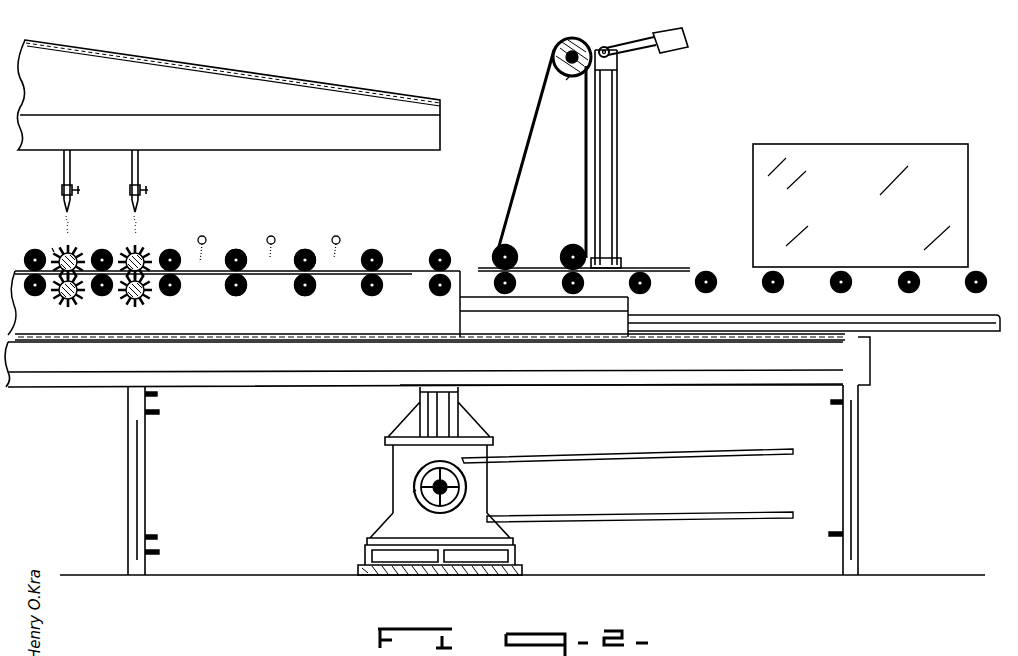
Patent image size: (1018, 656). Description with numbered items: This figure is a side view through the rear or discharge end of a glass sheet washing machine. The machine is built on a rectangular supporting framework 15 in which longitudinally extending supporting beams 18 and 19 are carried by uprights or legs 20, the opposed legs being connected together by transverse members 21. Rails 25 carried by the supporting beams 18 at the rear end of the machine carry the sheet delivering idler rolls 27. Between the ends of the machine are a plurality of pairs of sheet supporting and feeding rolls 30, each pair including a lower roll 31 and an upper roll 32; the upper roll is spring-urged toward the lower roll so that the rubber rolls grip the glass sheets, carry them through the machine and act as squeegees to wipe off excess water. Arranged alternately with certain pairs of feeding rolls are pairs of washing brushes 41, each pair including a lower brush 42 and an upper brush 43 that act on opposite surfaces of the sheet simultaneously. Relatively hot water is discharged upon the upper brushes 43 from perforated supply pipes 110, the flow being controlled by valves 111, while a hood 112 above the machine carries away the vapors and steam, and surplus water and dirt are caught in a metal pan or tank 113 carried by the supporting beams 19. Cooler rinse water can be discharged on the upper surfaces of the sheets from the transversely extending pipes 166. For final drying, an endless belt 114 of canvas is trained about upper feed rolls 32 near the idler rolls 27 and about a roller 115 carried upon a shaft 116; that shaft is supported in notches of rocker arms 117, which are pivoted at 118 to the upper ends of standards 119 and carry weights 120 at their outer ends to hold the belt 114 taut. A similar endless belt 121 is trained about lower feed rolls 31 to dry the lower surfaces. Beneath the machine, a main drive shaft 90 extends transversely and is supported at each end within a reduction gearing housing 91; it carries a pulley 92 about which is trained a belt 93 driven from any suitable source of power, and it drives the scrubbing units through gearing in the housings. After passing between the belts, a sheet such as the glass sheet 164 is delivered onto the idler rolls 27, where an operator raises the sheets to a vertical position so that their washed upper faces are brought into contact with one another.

The hood 112 is at (116, 64).
The supply pipes 110 is at (128, 161).
The valves 111 is at (150, 189).
The washing brushes 41 is at (128, 244).
The lower brush 42 is at (128, 306).
The upper brush 43 is at (54, 246).
The sheet supporting and feeding rolls 30 is at (306, 241).
The upper roll 32 is at (292, 262).
The lower roll 31 is at (294, 292).
The metal pan or tank 113 is at (302, 322).
The transversely extending pipes 166 is at (210, 236).
The shaft 116 is at (582, 38).
The endless belt 114 is at (584, 172).
The roller 115 is at (566, 80).
The standards 119 is at (619, 164).
The pivot 118 is at (604, 46).
The rocker arms 117 is at (626, 34).
The weights 120 is at (668, 54).
The endless belt 121 is at (552, 296).
The glass sheet 164 is at (866, 156).
The sheet delivering idler rolls 27 is at (898, 290).
The rails 25 is at (948, 331).
The supporting beam 19 is at (56, 366).
The supporting beam 18 is at (552, 374).
The supporting framework 15 is at (782, 395).
The uprights or legs 20 is at (146, 500).
The transverse members 21 is at (158, 398).
The reduction gearing housing 91 is at (396, 468).
The main drive shaft 90 is at (452, 488).
The pulley 92 is at (414, 492).
The belt 93 is at (700, 512).